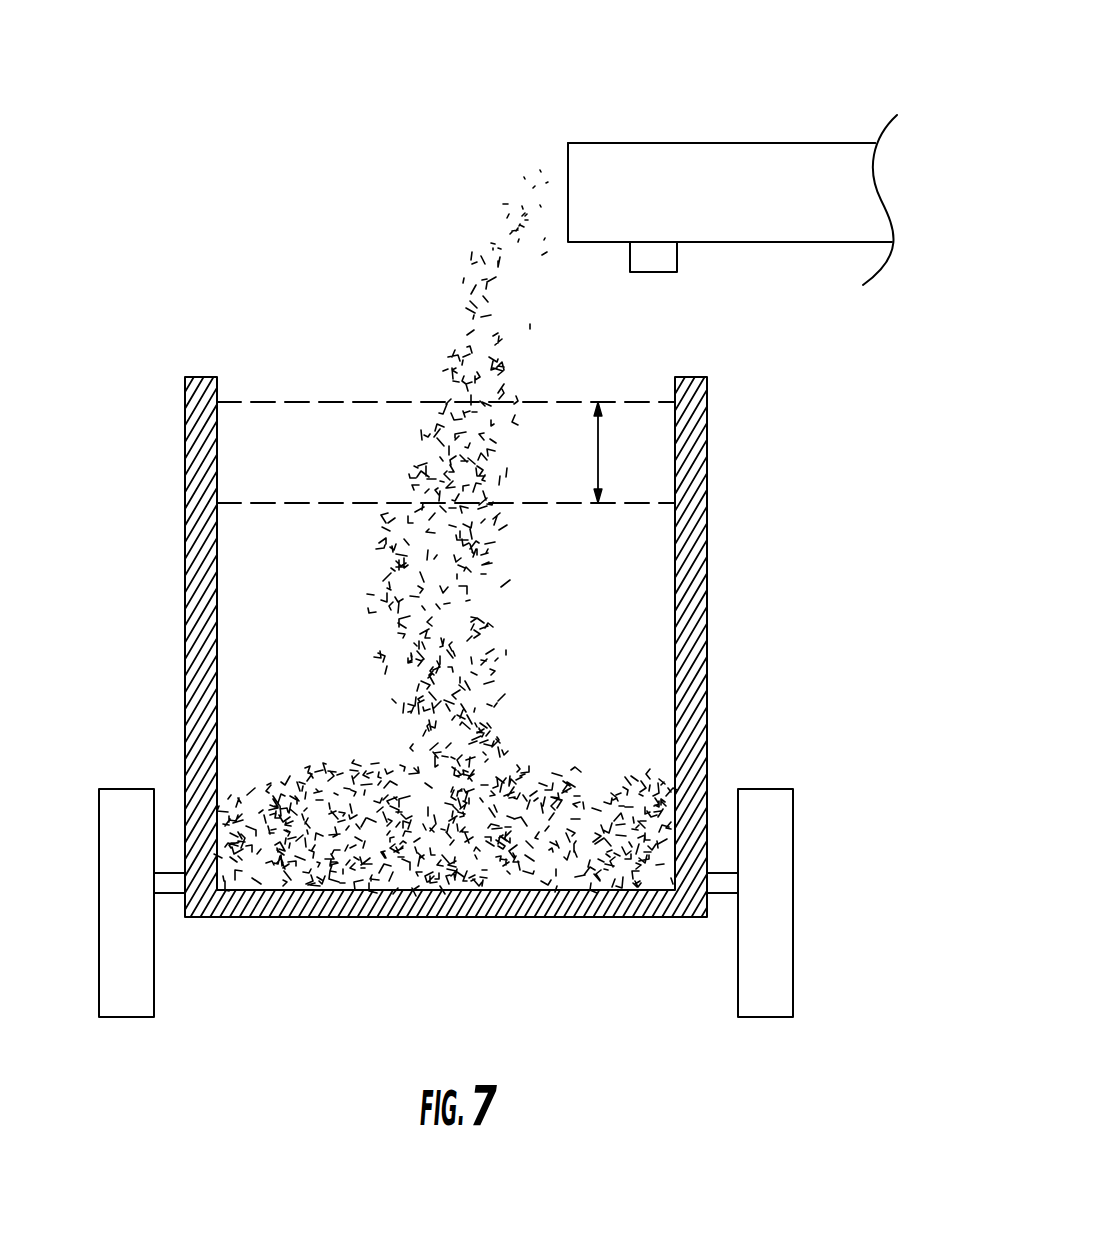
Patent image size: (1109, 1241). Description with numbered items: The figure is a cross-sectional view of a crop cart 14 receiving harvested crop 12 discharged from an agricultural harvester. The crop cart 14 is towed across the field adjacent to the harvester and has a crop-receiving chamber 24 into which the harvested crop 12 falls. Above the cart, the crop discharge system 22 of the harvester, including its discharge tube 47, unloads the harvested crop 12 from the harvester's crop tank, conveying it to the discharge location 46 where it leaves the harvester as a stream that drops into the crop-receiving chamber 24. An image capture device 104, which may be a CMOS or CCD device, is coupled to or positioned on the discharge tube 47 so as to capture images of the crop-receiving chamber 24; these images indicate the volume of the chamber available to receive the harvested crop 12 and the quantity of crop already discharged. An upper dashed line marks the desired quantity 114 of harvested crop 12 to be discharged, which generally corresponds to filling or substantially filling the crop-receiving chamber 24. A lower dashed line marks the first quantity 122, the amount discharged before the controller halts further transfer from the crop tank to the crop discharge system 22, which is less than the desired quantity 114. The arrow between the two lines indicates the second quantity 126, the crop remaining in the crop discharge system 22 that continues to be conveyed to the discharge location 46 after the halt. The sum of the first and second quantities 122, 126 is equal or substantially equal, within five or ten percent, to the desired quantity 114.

The harvested crop 12 is at (445, 465).
The crop cart 14 is at (131, 178).
The crop discharge system 22 is at (853, 110).
The crop-receiving chamber 24 is at (602, 612).
The discharge location 46 is at (548, 158).
The discharge tube 47 is at (709, 143).
The image capture device 104 is at (655, 272).
The desired quantity 114 is at (250, 402).
The first quantity 122 is at (351, 503).
The second quantity 126 is at (598, 438).